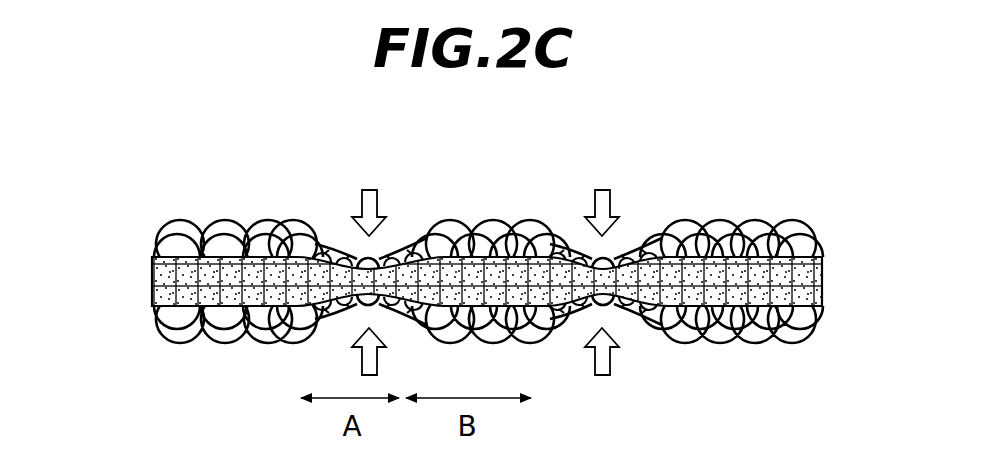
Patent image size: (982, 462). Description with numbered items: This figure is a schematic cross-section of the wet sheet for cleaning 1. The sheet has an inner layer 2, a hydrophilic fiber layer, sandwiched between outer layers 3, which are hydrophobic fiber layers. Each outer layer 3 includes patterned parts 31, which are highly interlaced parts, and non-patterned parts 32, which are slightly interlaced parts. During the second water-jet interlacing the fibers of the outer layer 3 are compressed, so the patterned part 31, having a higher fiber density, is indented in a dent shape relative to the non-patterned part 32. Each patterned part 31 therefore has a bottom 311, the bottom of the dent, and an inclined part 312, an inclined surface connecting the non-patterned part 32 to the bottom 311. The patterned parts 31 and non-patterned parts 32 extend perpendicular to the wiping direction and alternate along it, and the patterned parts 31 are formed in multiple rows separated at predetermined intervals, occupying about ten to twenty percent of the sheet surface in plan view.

The wet sheet for cleaning 1 is at (216, 152).
The inner layer 2 is at (813, 287).
The outer layer 3 is at (150, 316).
The patterned part 31 is at (391, 232).
The bottom 311 is at (358, 253).
The inclined part 312 is at (296, 233).
The non-patterned part 32 is at (467, 206).